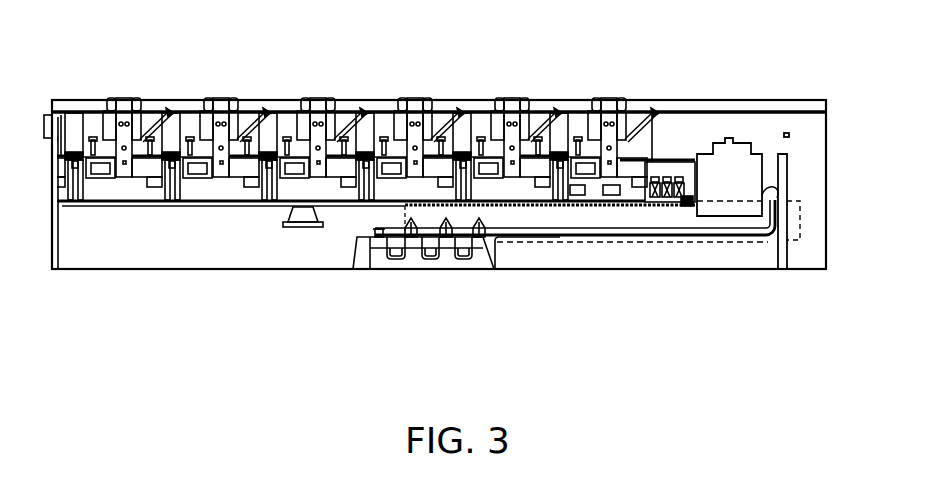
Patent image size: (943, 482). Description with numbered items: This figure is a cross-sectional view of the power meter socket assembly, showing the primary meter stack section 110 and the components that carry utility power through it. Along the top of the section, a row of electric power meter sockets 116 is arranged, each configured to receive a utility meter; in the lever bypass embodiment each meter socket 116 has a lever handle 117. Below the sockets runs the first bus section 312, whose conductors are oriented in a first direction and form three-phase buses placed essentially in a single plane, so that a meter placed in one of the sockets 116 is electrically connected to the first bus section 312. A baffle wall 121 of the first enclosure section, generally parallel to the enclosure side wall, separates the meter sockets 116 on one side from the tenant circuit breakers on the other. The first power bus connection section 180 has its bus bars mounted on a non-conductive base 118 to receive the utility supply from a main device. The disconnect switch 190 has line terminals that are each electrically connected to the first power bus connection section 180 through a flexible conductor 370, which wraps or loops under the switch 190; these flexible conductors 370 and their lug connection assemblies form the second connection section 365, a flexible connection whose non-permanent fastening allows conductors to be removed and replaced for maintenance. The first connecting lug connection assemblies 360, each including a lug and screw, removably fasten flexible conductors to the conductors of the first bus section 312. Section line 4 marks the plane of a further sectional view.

The primary meter stack section 110 is at (272, 76).
The electric power meter socket 116 is at (93, 115).
The lever handle 117 is at (158, 116).
The baffle wall 121 is at (128, 247).
The first bus section 312 is at (243, 204).
The section line 4 is at (395, 218).
The base 118 is at (428, 270).
The first power bus connection section 180 is at (482, 286).
The flexible conductor 370 is at (650, 240).
The first connecting lug connection assembly 360 is at (683, 207).
The disconnect switch 190 is at (718, 172).
The second connection section 365 is at (770, 246).